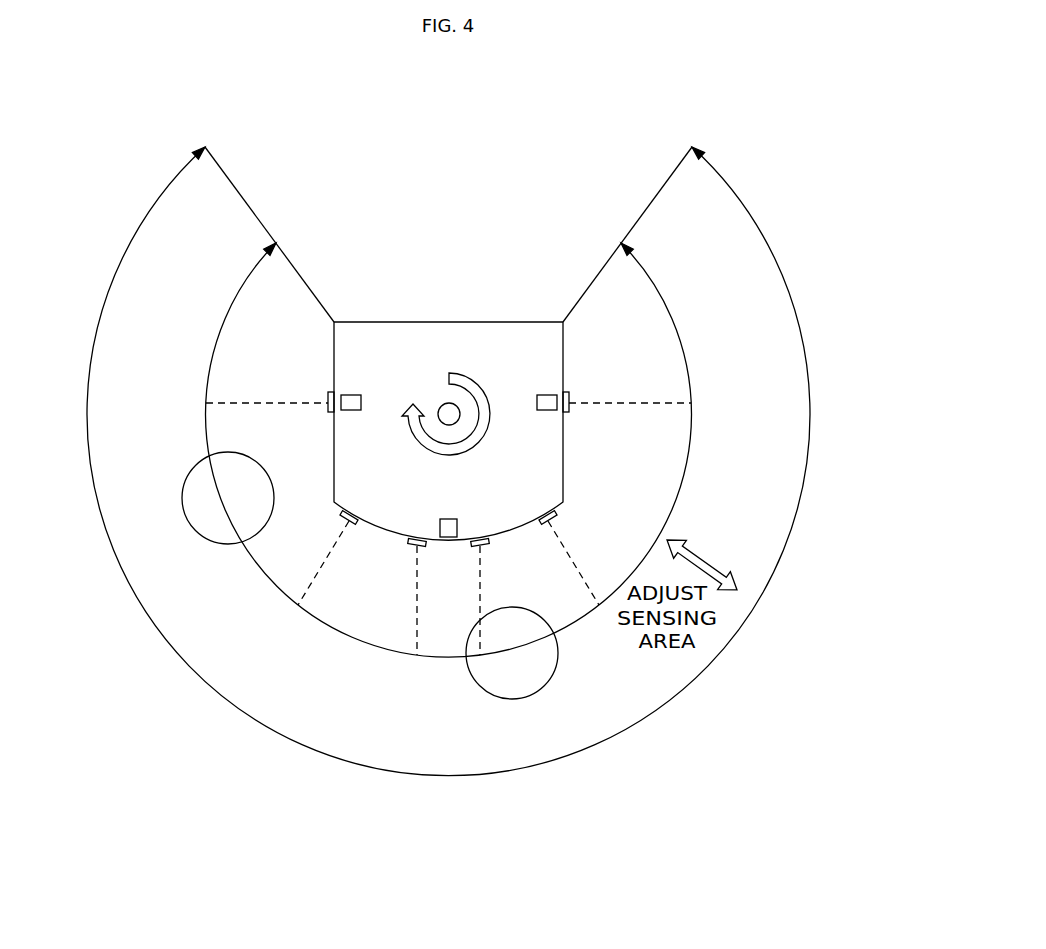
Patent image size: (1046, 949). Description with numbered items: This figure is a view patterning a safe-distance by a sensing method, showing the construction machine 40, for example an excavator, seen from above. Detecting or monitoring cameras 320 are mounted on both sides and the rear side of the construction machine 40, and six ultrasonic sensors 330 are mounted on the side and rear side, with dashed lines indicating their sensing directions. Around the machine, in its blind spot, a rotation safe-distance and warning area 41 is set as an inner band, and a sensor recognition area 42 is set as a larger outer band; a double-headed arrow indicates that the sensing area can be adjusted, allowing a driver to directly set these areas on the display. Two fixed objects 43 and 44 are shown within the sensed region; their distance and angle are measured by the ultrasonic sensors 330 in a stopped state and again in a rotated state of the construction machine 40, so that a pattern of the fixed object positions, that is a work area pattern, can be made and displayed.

The construction machine 40 is at (438, 340).
The warning area 41 is at (622, 243).
The sensor recognition area 42 is at (692, 147).
The fixed object 43 is at (210, 545).
The fixed object 44 is at (535, 697).
The detecting camera 320 is at (354, 395).
The ultrasonic sensor 330 is at (330, 398).